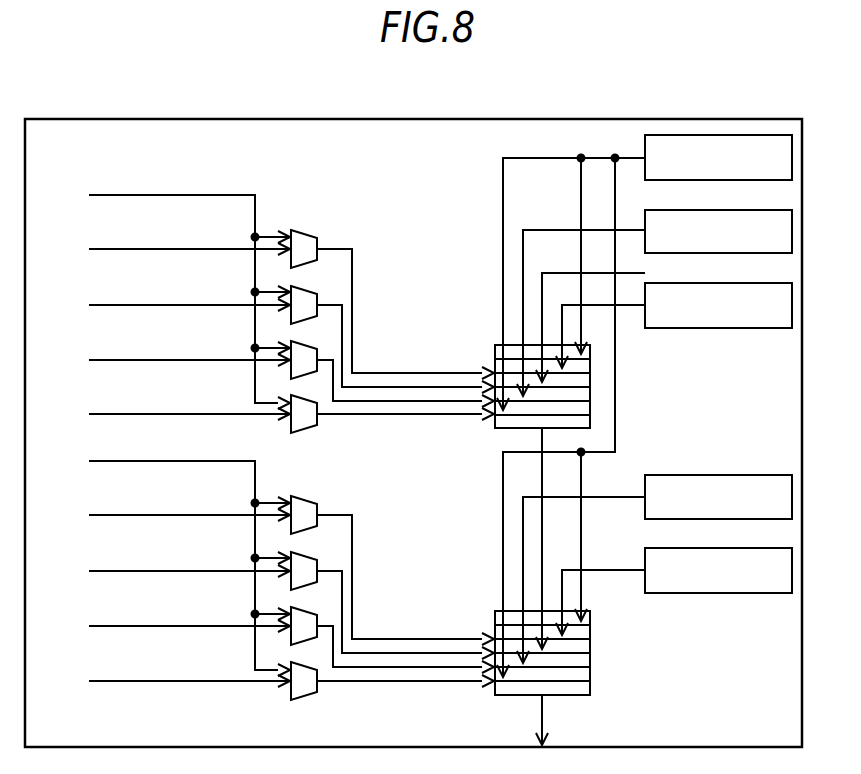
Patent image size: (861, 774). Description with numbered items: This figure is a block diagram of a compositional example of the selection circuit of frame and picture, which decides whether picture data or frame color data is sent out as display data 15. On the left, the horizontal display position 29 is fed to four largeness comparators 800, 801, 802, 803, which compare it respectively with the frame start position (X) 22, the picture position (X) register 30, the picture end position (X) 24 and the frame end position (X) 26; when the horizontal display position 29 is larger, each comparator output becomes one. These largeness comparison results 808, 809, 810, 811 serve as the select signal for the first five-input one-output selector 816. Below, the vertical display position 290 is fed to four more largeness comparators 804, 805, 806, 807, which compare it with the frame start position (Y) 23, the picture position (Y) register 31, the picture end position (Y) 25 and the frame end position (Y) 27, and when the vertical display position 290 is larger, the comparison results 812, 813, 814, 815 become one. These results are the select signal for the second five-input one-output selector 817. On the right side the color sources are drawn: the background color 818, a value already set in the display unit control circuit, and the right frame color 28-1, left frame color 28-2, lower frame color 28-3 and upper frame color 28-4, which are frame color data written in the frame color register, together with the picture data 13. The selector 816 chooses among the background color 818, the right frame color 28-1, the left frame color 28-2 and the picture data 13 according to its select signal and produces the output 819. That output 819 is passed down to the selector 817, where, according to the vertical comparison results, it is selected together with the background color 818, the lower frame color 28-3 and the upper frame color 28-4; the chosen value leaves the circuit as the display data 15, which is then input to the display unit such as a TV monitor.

The horizontal display position 29 is at (92, 194).
The frame start position (X) 22 is at (99, 247).
The picture position (X) register 30 is at (99, 303).
The picture end position (X) 24 is at (99, 358).
The frame end position (X) 26 is at (99, 412).
The vertical display position 290 is at (98, 459).
The frame start position (Y) 23 is at (99, 512).
The picture position (Y) register 31 is at (99, 568).
The picture end position (Y) 25 is at (99, 623).
The frame end position (Y) 27 is at (99, 678).
The largeness comparator 800 is at (298, 230).
The largeness comparator 801 is at (319, 299).
The largeness comparator 802 is at (319, 359).
The largeness comparator 803 is at (306, 434).
The largeness comparator 804 is at (319, 511).
The largeness comparator 805 is at (319, 564).
The largeness comparator 806 is at (319, 619).
The largeness comparator 807 is at (300, 701).
The largeness comparison result 808 is at (355, 262).
The largeness comparison result 809 is at (345, 323).
The largeness comparison result 810 is at (334, 370).
The largeness comparison result 811 is at (425, 417).
The largeness comparison result 812 is at (355, 533).
The largeness comparison result 813 is at (345, 584).
The largeness comparison result 814 is at (335, 631).
The largeness comparison result 815 is at (422, 684).
The five-input one-output selector 816 is at (590, 393).
The five-input one-output selector 817 is at (590, 662).
The background color 818 is at (706, 181).
The right frame color 28-1 is at (705, 254).
The left frame color 28-2 is at (758, 329).
The lower frame color 28-3 is at (762, 474).
The upper frame color 28-4 is at (731, 595).
The picture data 13 is at (628, 271).
The output of five-input one-output selector 816 819 is at (543, 587).
The display data 15 is at (543, 718).